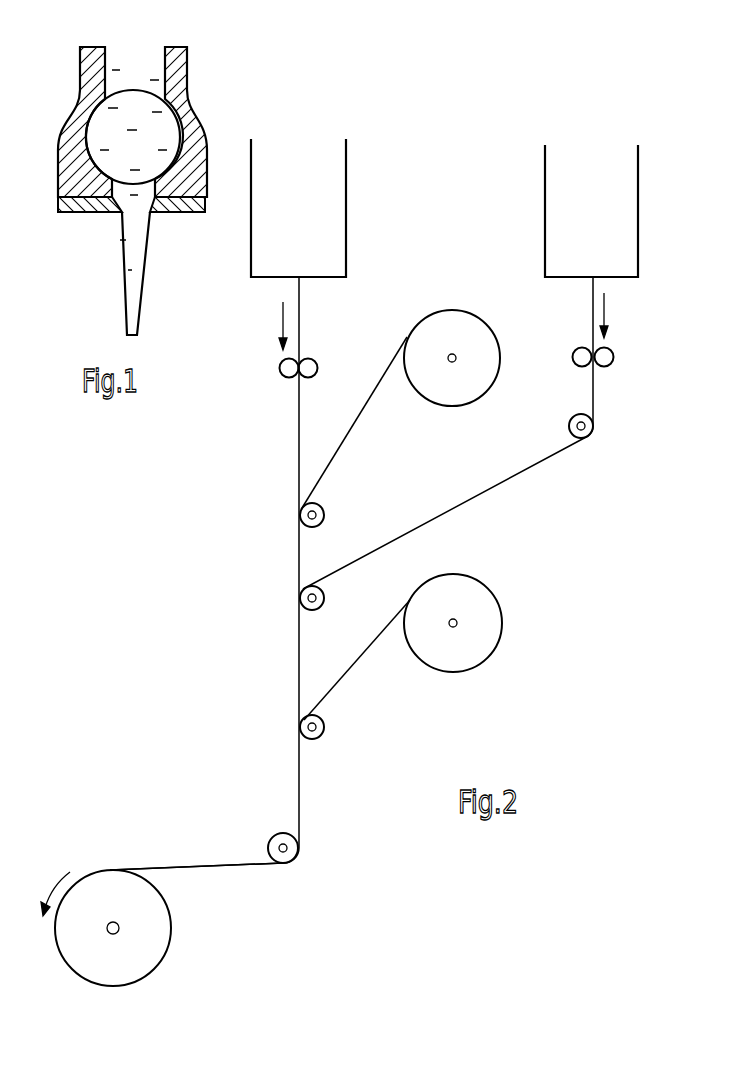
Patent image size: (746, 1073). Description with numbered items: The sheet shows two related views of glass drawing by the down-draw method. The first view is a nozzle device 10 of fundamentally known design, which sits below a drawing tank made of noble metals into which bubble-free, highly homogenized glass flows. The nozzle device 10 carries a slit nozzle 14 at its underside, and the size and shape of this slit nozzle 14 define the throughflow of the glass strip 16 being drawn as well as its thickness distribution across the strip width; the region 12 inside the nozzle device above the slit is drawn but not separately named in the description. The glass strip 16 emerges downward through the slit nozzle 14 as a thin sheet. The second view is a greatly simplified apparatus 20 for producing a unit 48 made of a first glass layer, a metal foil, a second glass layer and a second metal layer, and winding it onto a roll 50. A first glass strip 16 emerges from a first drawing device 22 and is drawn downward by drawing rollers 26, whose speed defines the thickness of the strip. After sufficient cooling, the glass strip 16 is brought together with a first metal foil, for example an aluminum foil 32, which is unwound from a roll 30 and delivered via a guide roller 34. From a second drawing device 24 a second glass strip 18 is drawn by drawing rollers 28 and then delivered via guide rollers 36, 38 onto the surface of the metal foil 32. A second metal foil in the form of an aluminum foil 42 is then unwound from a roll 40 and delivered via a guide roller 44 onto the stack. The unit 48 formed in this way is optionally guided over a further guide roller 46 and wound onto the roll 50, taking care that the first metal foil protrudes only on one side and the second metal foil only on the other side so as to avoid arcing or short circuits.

In FIG. 1, the nozzle device 10 is at (180, 88).
In FIG. 1, the melt material 12 is at (137, 66).
In FIG. 1, the slit nozzle 14 is at (162, 215).
In FIG. 1, the glass strip 16 is at (133, 310).
In FIG. 2, the glass strip 16 is at (300, 315).
In FIG. 2, the second glass strip 18 is at (605, 392).
In FIG. 2, the apparatus 20 is at (442, 125).
In FIG. 2, the first drawing device 22 is at (330, 223).
In FIG. 2, the second drawing device 24 is at (625, 203).
In FIG. 2, the drawing rollers 26 is at (289, 378).
In FIG. 2, the drawing rollers 28 is at (578, 362).
In FIG. 2, the roll 30 is at (445, 322).
In FIG. 2, the aluminum foil 32 is at (345, 440).
In FIG. 2, the guide roller 34 is at (325, 505).
In FIG. 2, the guide roller 36 is at (597, 438).
In FIG. 2, the guide roller 38 is at (322, 592).
In FIG. 2, the roll 40 is at (487, 600).
In FIG. 2, the aluminum foil 42 is at (350, 672).
In FIG. 2, the guide roller 44 is at (325, 731).
In FIG. 2, the guide roller 46 is at (278, 835).
In FIG. 2, the unit 48 is at (168, 865).
In FIG. 2, the roll 50 is at (100, 885).